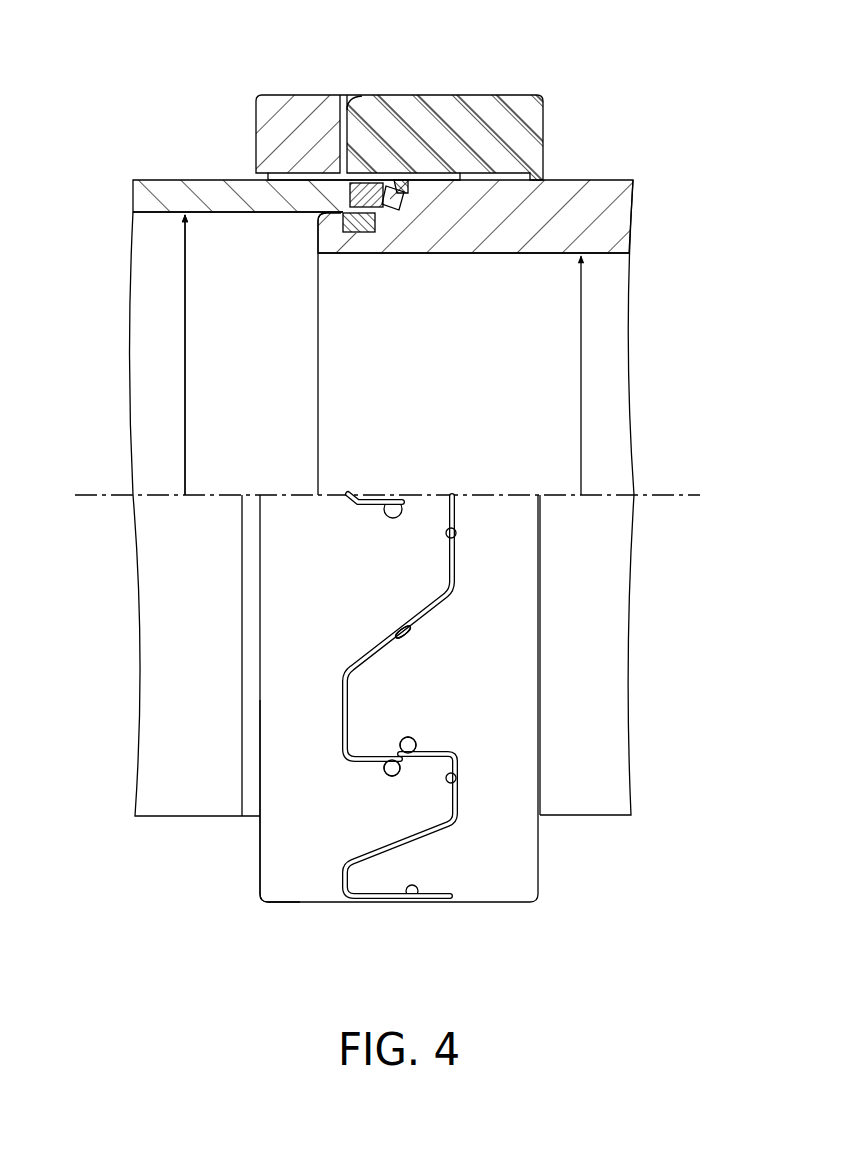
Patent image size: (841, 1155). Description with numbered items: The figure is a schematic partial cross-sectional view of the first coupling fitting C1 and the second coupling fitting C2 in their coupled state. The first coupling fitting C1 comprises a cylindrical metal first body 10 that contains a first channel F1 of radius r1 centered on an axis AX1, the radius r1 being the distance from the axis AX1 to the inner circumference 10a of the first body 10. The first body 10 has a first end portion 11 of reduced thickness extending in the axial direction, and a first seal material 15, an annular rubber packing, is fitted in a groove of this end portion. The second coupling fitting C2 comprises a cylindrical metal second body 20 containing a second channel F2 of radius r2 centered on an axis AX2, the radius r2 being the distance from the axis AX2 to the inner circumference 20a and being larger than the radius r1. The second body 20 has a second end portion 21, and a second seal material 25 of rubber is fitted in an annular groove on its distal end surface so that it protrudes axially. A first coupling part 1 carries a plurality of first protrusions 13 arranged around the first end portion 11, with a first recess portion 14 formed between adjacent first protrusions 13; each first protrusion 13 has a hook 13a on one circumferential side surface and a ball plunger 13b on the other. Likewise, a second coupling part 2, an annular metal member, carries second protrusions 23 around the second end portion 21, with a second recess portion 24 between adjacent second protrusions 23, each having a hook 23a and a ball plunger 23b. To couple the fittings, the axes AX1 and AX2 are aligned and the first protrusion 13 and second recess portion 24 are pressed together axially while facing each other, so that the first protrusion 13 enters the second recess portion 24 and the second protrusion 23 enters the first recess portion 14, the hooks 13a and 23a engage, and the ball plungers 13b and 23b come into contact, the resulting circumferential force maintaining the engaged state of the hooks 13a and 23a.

The first coupling part 1 is at (498, 912).
The second coupling part 2 is at (287, 912).
The first body 10 is at (578, 180).
The inner circumference of the first body 10a is at (510, 255).
The first end portion 11 is at (312, 240).
The first protrusion 13 is at (440, 95).
The hook 13a is at (407, 764).
The ball plunger 13b is at (398, 633).
The first recess portion 14 is at (458, 530).
The first seal material 15 is at (367, 234).
The second body 20 is at (220, 180).
The inner circumference of the second body 20a is at (212, 214).
The second end portion 21 is at (409, 184).
The second protrusion 23 is at (460, 552).
The hook 23a is at (386, 750).
The ball plunger 23b is at (410, 632).
The second recess portion 24 is at (352, 95).
The second seal material 25 is at (422, 203).
The first coupling fitting C1 is at (627, 134).
The second coupling fitting C2 is at (160, 135).
The first channel F1 is at (601, 299).
The second channel F2 is at (155, 298).
The radius of the first channel r1 is at (566, 375).
The radius of the second channel r2 is at (171, 355).
The axis of the first body AX1 is at (572, 497).
The axis of the second body AX2 is at (215, 497).